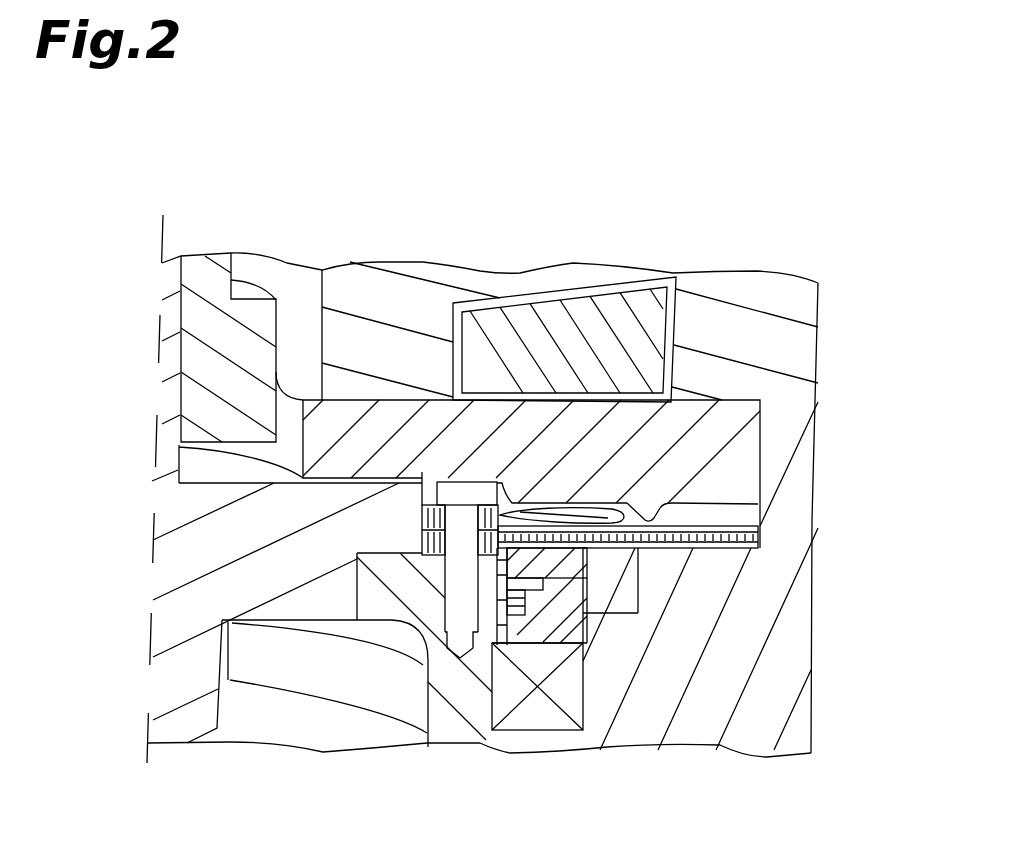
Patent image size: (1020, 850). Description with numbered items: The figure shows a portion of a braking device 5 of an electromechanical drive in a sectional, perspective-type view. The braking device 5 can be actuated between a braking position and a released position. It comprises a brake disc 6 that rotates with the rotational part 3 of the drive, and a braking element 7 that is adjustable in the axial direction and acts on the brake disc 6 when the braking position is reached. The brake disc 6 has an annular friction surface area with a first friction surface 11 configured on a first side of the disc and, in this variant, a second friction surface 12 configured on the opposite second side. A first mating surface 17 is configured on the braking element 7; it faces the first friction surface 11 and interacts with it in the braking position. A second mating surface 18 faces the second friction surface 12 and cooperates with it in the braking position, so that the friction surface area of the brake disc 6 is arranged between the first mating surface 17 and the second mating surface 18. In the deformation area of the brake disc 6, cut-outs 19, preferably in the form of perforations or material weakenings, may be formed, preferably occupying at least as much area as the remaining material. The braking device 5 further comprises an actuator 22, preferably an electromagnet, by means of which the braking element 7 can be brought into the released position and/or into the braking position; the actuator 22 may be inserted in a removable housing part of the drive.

The rotational part 3 is at (400, 588).
The braking device 5 is at (725, 387).
The brake disc 6 is at (522, 622).
The braking element 7 is at (601, 470).
The first friction surface 11 is at (660, 510).
The second friction surface 12 is at (668, 547).
The first mating surface 17 is at (758, 544).
The second mating surface 18 is at (607, 548).
The cut-outs 19 is at (543, 495).
The actuator 22 is at (575, 362).